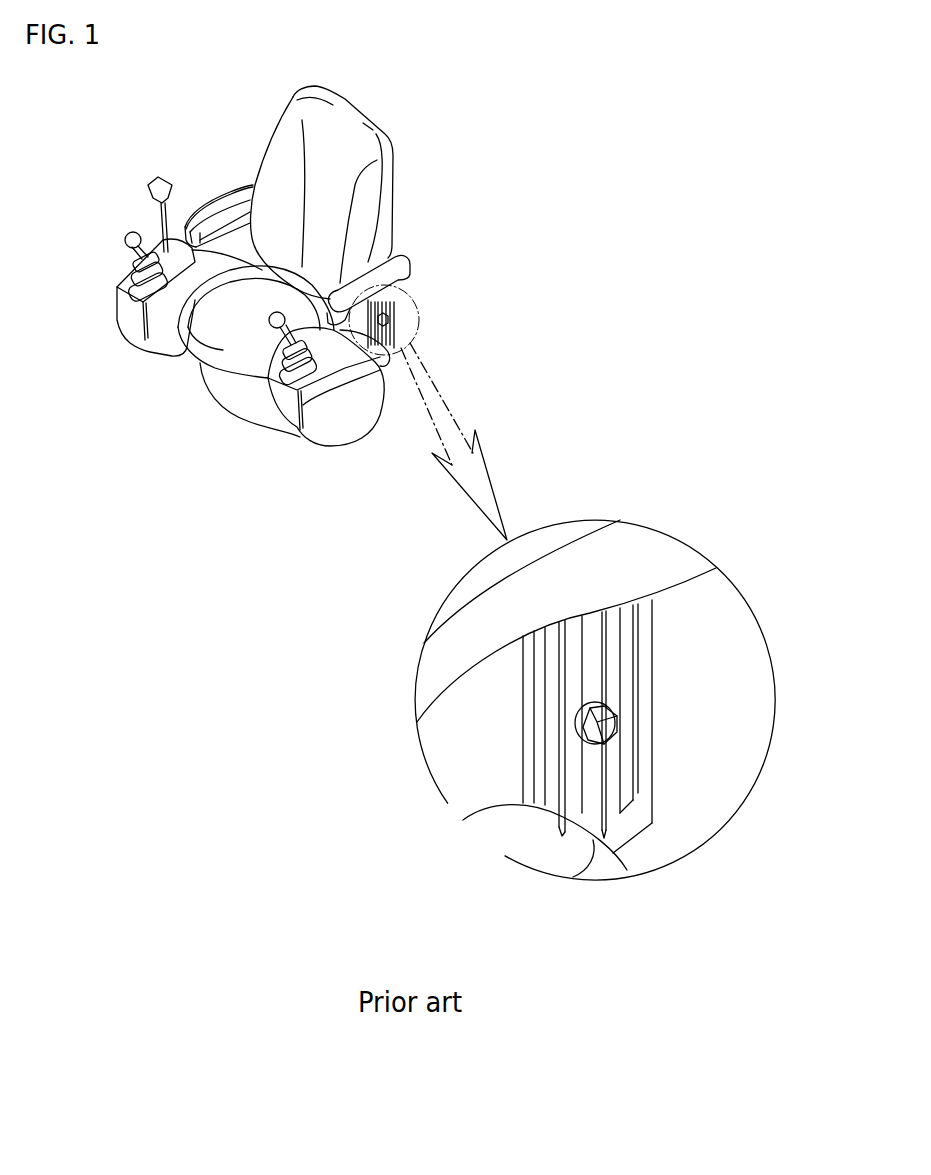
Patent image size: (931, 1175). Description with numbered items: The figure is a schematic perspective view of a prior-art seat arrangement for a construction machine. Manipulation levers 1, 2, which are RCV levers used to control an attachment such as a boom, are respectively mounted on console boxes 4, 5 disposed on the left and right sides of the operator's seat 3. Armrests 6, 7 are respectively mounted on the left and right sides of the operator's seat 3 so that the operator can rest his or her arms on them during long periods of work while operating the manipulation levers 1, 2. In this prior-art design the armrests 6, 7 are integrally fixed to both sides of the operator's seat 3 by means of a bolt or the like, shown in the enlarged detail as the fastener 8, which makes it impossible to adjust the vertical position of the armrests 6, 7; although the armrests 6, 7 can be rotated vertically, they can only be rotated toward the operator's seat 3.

The manipulation lever 1 is at (132, 240).
The manipulation lever 2 is at (277, 340).
The operator's seat 3 is at (282, 158).
The console box 4 is at (120, 323).
The console box 5 is at (337, 430).
The armrest 6 is at (227, 192).
The armrest 7 is at (393, 272).
The armrest fixing bolt 8 is at (610, 729).